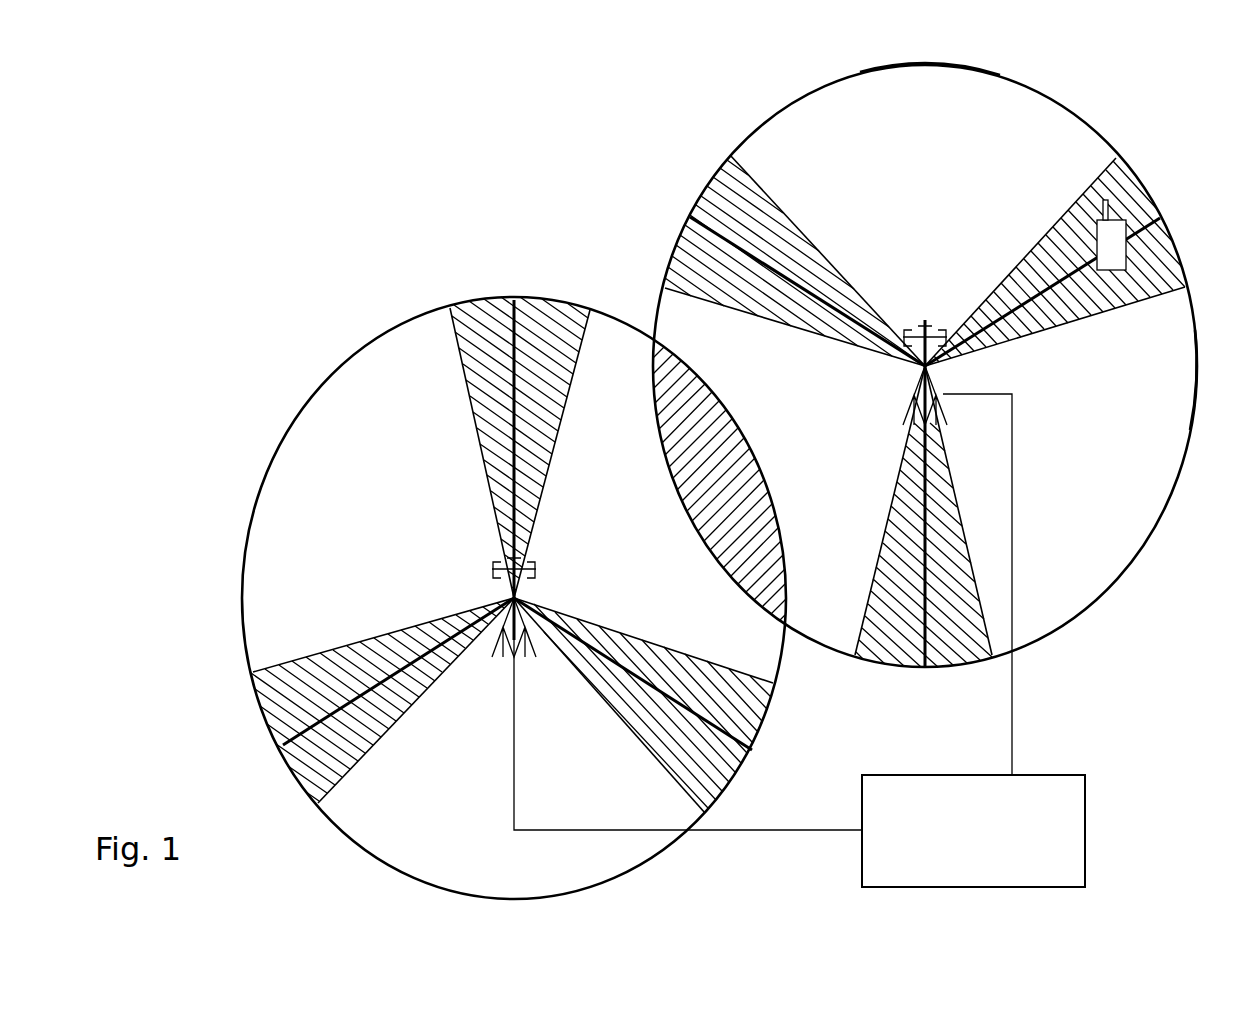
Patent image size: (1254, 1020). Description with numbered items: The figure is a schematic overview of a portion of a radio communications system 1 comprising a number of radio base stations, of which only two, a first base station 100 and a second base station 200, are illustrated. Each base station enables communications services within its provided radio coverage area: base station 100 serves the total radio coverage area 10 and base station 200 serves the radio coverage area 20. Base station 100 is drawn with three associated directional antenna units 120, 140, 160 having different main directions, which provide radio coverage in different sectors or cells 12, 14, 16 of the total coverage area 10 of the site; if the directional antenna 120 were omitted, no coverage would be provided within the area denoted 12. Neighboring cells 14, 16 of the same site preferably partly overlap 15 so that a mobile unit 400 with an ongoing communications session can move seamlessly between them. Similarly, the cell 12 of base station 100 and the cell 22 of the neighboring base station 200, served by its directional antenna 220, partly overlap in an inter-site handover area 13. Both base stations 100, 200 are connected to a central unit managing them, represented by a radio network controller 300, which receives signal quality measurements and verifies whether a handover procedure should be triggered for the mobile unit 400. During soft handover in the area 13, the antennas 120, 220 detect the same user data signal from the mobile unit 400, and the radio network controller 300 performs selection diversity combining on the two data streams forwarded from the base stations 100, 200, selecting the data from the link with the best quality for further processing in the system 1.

The radio communications system 1 is at (288, 117).
The radio coverage area 10 is at (887, 65).
The cell 12 is at (670, 332).
The inter-site handover area 13 is at (675, 442).
The cell 14 is at (1187, 413).
The overlap of neighboring cells 15 is at (1160, 250).
The cell 16 is at (1024, 100).
The radio coverage area 20 is at (348, 358).
The cell 22 is at (770, 660).
The radio base station 100 is at (898, 414).
The directional antenna unit 120 is at (905, 355).
The directional antenna unit 140 is at (966, 350).
The directional antenna unit 160 is at (920, 323).
The radio base station 200 is at (506, 590).
The directional antenna 220 is at (540, 572).
The radio network controller 300 is at (1086, 830).
The mobile unit 400 is at (1130, 212).